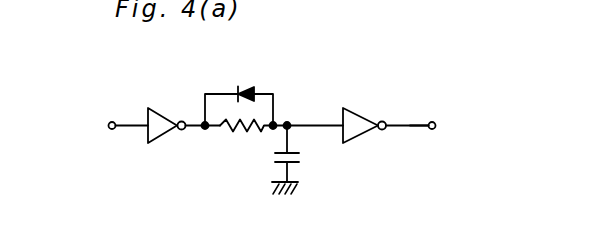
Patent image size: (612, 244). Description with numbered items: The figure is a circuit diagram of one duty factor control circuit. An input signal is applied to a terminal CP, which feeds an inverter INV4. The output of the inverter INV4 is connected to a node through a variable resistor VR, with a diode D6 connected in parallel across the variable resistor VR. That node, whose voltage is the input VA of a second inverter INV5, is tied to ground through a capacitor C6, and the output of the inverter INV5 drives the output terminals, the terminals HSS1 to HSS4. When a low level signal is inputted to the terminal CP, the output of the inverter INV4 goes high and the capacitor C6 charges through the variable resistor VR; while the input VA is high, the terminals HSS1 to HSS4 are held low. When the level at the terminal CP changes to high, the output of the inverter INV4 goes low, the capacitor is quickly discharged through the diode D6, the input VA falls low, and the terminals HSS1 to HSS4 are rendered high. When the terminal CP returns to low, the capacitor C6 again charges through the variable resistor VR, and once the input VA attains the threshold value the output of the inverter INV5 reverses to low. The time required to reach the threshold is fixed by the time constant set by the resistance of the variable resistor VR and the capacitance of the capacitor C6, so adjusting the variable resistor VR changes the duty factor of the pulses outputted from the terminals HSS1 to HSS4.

The terminal CP is at (109, 122).
The inverter INV4 is at (165, 143).
The diode D6 is at (238, 91).
The variable resistor VR is at (267, 111).
The input of inverter INV5 VA is at (263, 133).
The capacitor C6 is at (304, 160).
The inverter INV5 is at (378, 108).
The terminal HSS1 is at (481, 135).
The terminal HSS4 is at (462, 149).